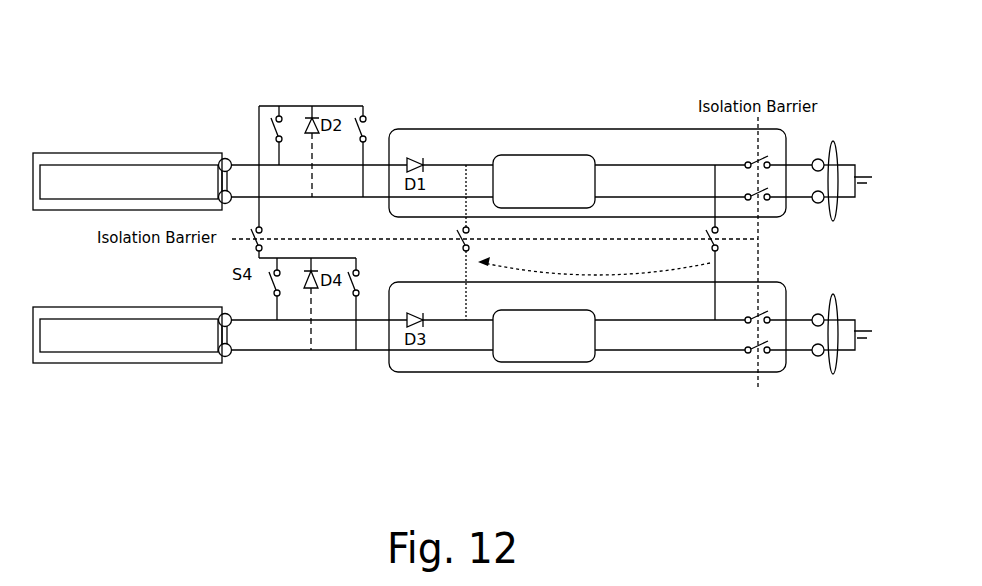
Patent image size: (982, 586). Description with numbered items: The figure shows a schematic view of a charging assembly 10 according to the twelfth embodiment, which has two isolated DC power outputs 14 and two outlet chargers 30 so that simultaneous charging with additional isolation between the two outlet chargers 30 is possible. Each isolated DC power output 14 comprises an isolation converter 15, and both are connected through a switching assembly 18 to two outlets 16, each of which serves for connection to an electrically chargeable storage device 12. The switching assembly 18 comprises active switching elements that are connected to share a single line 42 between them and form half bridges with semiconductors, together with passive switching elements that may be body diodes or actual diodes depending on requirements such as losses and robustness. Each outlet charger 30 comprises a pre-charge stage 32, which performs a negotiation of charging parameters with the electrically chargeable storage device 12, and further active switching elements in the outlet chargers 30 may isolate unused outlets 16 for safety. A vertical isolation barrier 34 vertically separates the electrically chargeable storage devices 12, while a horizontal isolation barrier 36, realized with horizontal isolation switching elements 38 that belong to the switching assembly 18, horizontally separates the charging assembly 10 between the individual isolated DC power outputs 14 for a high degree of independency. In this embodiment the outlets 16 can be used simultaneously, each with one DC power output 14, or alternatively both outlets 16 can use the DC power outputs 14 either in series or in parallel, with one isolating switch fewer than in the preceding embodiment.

The charging assembly 10 is at (248, 108).
The electrically chargeable storage device 12 is at (860, 176).
The isolated DC power output 14 is at (95, 153).
The isolation converter 15 is at (125, 165).
The outlet 16 is at (833, 140).
The switching assembly 18 is at (340, 101).
The outlet charger 30 is at (698, 132).
The pre-charge stage 32 is at (545, 156).
The vertical isolation barrier 34 is at (758, 365).
The horizontal isolation barrier 36 is at (358, 240).
The horizontal isolation switching element 38 is at (460, 232).
The vertical isolation switching element 42 is at (263, 260).